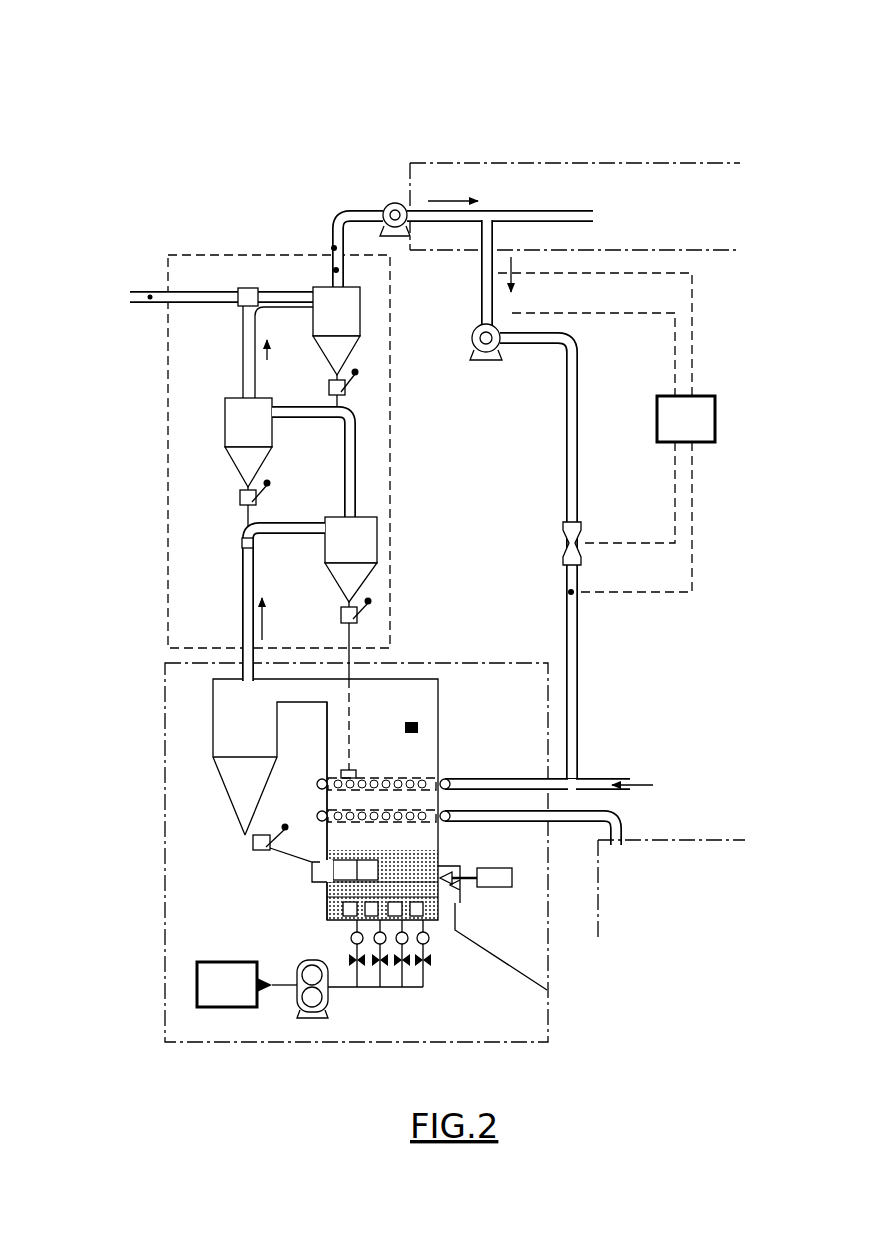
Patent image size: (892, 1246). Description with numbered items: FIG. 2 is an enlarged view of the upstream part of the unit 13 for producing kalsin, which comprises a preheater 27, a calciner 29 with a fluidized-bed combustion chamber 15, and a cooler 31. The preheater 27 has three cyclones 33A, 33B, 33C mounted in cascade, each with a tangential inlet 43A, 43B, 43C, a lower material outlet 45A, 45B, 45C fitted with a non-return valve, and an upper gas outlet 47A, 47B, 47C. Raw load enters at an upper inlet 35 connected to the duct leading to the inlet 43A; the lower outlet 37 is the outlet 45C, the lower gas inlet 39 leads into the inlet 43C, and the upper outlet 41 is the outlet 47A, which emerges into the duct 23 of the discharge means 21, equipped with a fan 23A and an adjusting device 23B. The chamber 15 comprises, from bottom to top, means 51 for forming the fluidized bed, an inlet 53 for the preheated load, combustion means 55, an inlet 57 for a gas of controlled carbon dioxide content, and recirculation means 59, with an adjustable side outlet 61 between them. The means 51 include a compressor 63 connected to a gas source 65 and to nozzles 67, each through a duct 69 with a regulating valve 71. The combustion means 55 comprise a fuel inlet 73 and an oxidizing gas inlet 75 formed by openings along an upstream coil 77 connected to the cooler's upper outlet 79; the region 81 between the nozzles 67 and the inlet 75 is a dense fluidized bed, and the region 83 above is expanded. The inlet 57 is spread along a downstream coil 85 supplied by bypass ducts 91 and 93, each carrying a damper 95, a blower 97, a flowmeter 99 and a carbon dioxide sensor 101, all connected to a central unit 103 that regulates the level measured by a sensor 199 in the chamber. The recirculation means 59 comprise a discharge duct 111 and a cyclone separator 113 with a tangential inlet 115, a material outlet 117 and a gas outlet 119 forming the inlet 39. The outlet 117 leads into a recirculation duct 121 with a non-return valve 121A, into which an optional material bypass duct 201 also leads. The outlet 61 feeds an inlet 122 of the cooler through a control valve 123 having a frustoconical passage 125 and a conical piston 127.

The unit for producing kalsin 13 is at (228, 83).
The means for discharging the flue gases 21 is at (543, 158).
The duct for extracting the flue gases 23 is at (391, 203).
The fan 23A is at (398, 203).
The device for adjusting the fan 23B is at (332, 230).
The preheater 27 is at (170, 250).
The calciner 29 is at (163, 830).
The cooler 31 is at (685, 838).
The upper cyclone 33A is at (352, 322).
The intermediate cyclone 33B is at (232, 428).
The lower cyclone 33C is at (365, 542).
The upper inlet for introducing the raw mineral load 35 is at (150, 296).
The lower outlet for discharging the preheated load 37 is at (352, 636).
The lower inlet for introducing the gases 39 is at (242, 645).
The upper outlet for discharging the cooled gases 41 is at (334, 248).
The tangential inlet of the upper cyclone 43A is at (292, 290).
The tangential inlet of the intermediate cyclone 43B is at (315, 422).
The tangential inlet of the lower cyclone 43C is at (310, 512).
The lower outlet of the upper cyclone 45A is at (346, 388).
The lower outlet of the intermediate cyclone 45B is at (240, 497).
The lower outlet of the lower cyclone 45C is at (358, 612).
The upper outlet of the upper cyclone 47A is at (340, 272).
The upper outlet of the intermediate cyclone 47B is at (240, 372).
The upper outlet of the lower cyclone 47C is at (358, 500).
The fluidized-bed combustion chamber 15 is at (447, 678).
The means for forming a fluidized bed 51 is at (295, 946).
The inlet for introducing the preheated mineral load 53 is at (327, 892).
The combustion means 55 is at (440, 846).
The inlet for introducing a treatment gas 57 is at (448, 778).
The means for recirculating the calcined mineral load 59 is at (210, 725).
The adjustable side outlet 61 is at (453, 945).
The compressor 63 is at (312, 1020).
The gas source 65 is at (244, 995).
The nozzles 67 is at (347, 916).
The duct 69 is at (356, 978).
The regulating valve 71 is at (380, 978).
The inlet for supplying fuel 73 is at (375, 866).
The inlet for injecting an oxidizing gas 75 is at (450, 808).
The upstream coil 77 is at (405, 810).
The upper outlet for discharging the gases from the cooler 79 is at (585, 825).
The region of dense fluidized bed 81 is at (409, 870).
The region of expanded fluidized bed 83 is at (410, 711).
The downstream coil 85 is at (322, 782).
The first bypass duct 91 is at (578, 708).
The second bypass duct 93 is at (590, 778).
The damper 95 is at (482, 270).
The blower 97 is at (486, 353).
The flowmeter 99 is at (565, 543).
The sensor 101 is at (568, 592).
The central unit 103 is at (704, 430).
The duct for discharging the material and the gas 111 is at (300, 679).
The cyclone separator 113 is at (213, 757).
The tangential inlet 115 is at (260, 690).
The lower outlet for discharging the material 117 is at (245, 836).
The upper outlet for discharging the gas 119 is at (242, 672).
The recirculation duct 121 is at (256, 848).
The non-return valve 121A is at (262, 851).
The inlet for supplying the material from the cooler 122 is at (520, 975).
The valve for controlling the amount of mineral load removed 123 is at (458, 915).
The frustoconical flow passage 125 is at (470, 862).
The movable conical piston 127 is at (470, 892).
The sensor 199 is at (420, 728).
The material bypass duct 201 is at (300, 850).